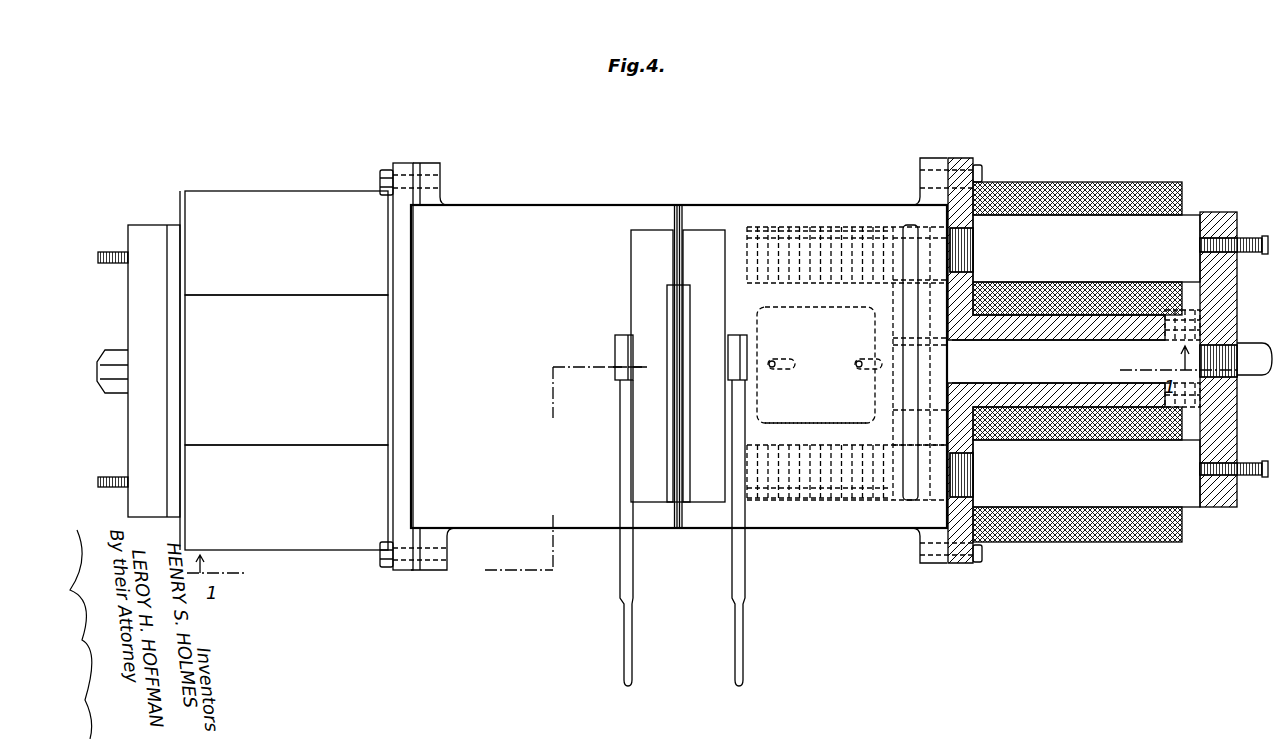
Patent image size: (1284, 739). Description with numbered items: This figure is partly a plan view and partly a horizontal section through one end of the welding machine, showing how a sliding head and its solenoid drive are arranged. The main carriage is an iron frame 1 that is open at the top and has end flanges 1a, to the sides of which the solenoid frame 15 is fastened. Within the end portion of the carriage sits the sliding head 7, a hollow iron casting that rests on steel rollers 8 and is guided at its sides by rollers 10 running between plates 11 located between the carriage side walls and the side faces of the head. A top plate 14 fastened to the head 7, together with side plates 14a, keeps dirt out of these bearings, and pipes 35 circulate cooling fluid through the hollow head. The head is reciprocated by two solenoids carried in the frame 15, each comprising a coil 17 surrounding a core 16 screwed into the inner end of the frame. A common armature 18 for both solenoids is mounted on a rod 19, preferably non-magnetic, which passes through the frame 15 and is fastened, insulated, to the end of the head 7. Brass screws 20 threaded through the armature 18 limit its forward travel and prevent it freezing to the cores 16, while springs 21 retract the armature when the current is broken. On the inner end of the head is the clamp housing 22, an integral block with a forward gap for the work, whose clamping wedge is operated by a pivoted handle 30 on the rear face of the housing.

The iron frame 1 is at (528, 205).
The end flanges 1a is at (442, 170).
The sliding head 7 is at (813, 423).
The steel rollers 8 is at (812, 275).
The rollers 10 is at (827, 500).
The plates 11 is at (790, 497).
The top plate 14 is at (768, 182).
The side plates 14a is at (833, 205).
The iron frame 15 is at (980, 370).
The cores 16 is at (1086, 361).
The coils 17 is at (1092, 570).
The armature 18 is at (147, 415).
The rod 19 is at (1058, 361).
The brass screws 20 is at (110, 266).
The springs 21 is at (1165, 387).
The housing 22 is at (678, 366).
The handle 30 is at (733, 565).
The pipes 35 is at (788, 368).